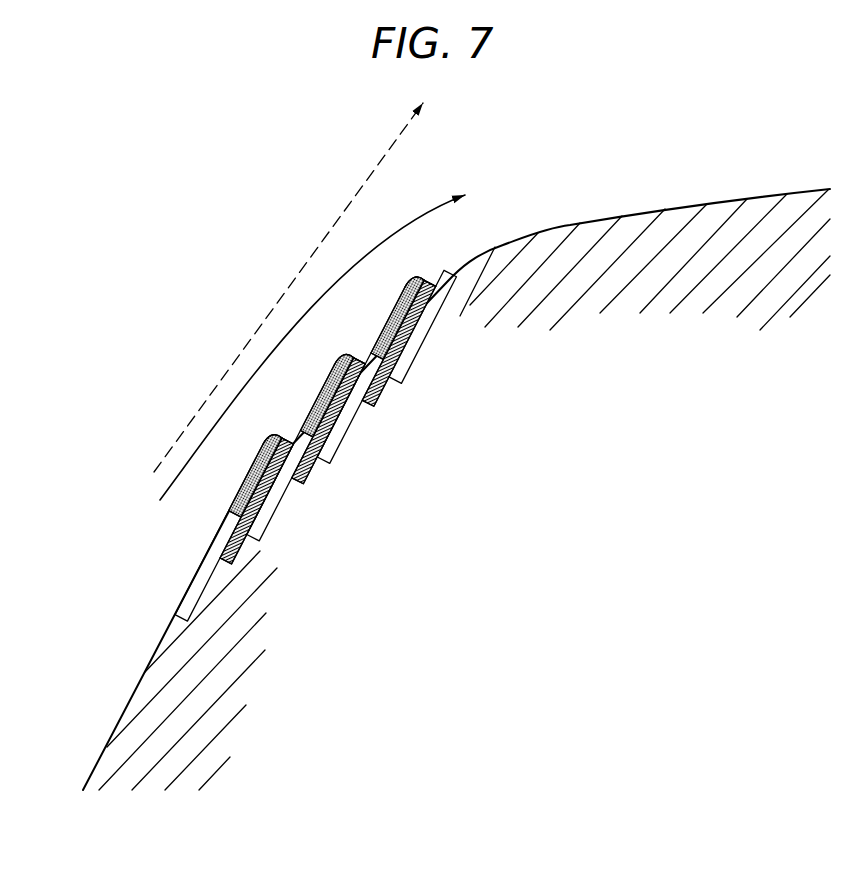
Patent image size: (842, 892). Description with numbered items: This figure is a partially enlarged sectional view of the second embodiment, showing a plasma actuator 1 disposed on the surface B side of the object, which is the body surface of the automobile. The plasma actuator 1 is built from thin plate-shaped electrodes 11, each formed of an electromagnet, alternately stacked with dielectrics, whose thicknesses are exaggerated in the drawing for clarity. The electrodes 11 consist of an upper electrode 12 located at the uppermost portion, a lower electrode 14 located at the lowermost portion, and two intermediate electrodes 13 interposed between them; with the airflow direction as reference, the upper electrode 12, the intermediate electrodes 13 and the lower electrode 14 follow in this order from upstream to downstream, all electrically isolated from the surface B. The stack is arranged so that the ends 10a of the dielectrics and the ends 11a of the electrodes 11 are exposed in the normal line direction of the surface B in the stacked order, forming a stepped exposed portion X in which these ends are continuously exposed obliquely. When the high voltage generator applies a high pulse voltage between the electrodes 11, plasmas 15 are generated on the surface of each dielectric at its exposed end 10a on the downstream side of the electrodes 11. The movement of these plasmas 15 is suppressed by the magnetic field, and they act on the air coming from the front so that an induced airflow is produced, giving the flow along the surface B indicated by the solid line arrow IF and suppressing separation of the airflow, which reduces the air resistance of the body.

The plasma actuator 1 is at (153, 605).
The electrode 11 is at (183, 543).
The end of electrode 11a is at (294, 437).
The end of dielectric 10a is at (283, 436).
The upper electrode 12 is at (188, 583).
The intermediate electrode 13 is at (270, 528).
The lower electrode 14 is at (432, 328).
The plasma 15 is at (253, 464).
The surface of the object B is at (568, 222).
The stepped exposed portion X is at (236, 348).
The airflow IF is at (423, 217).